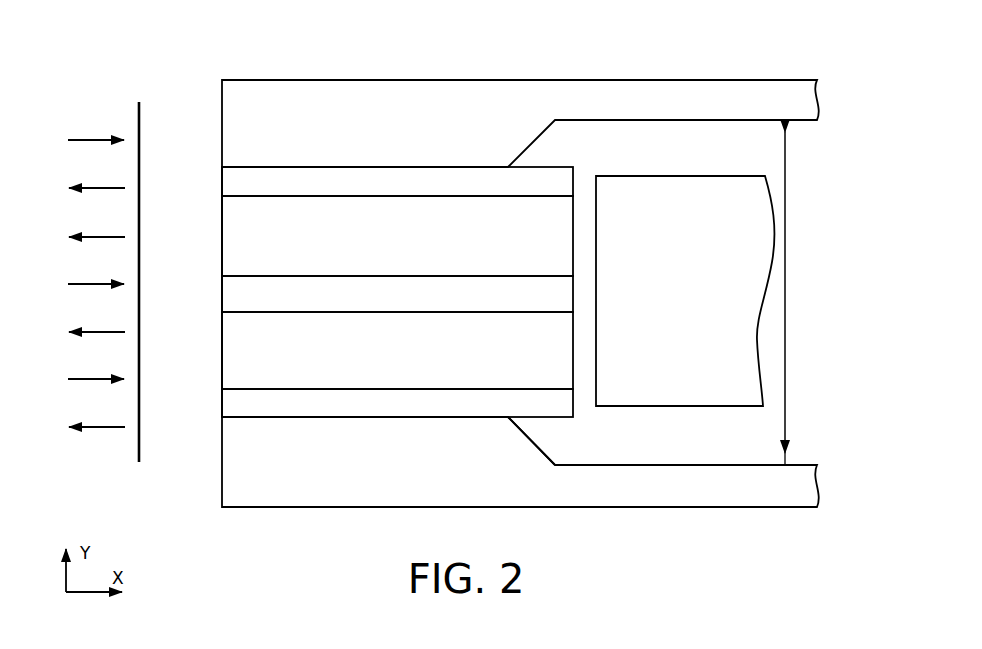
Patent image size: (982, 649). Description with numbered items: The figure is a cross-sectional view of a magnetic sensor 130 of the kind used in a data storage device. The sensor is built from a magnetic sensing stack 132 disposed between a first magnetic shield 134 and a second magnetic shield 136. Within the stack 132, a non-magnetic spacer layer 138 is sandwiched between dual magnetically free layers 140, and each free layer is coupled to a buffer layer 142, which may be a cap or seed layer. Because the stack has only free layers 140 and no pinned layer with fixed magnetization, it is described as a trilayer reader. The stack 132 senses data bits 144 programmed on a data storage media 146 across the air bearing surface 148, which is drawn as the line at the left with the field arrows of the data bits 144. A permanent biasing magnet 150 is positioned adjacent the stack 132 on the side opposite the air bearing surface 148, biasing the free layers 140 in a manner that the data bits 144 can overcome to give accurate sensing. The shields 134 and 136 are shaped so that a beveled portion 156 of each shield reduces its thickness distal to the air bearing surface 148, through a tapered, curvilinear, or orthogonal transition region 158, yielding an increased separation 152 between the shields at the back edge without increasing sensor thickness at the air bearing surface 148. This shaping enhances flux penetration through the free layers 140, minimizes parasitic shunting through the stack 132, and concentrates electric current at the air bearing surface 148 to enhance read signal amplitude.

The magnetic sensor 130 is at (771, 50).
The magnetic sensing stack 132 is at (374, 270).
The first magnetic shield 134 is at (520, 462).
The second magnetic shield 136 is at (520, 123).
The non-magnetic spacer layer 138 is at (397, 294).
The magnetically free layer 140 is at (397, 292).
The buffer layer 142 is at (397, 292).
The data bits 144 is at (92, 98).
The data storage media 146 is at (138, 467).
The air bearing surface (ABS) 148 is at (202, 455).
The permanent magnet 150 is at (685, 291).
The separation 152 is at (802, 292).
The beveled portion 156 is at (583, 116).
The transition region 158 is at (527, 440).